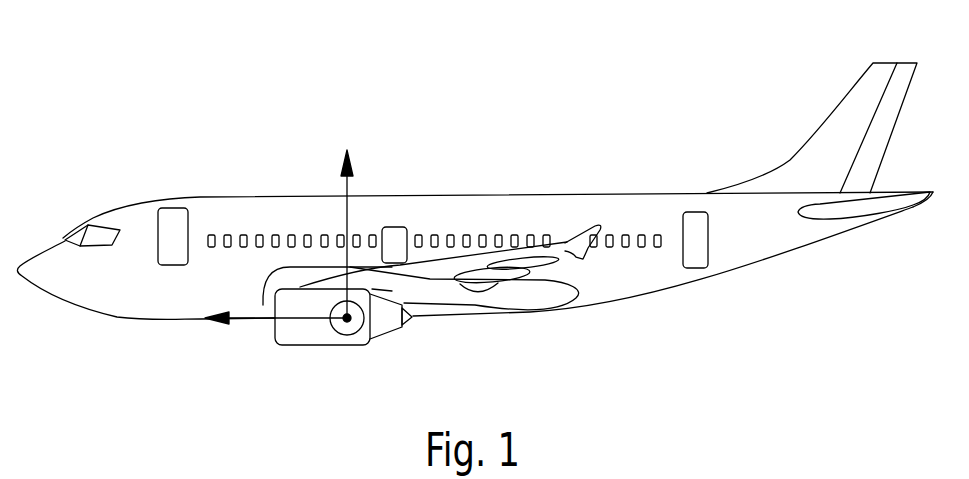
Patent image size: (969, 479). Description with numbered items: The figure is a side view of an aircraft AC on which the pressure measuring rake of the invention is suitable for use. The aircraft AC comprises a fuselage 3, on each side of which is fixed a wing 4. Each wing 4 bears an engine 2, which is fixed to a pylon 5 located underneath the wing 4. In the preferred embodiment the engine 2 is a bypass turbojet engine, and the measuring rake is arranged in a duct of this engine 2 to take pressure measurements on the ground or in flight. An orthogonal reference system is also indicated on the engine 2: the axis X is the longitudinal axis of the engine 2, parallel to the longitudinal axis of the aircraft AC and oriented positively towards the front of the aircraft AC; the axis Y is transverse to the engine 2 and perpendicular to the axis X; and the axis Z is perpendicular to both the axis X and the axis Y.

The aircraft AC is at (674, 110).
The engine 2 is at (285, 346).
The fuselage 3 is at (467, 218).
The wing 4 is at (437, 268).
The pylon 5 is at (428, 291).
The longitudinal axis X is at (250, 321).
The transverse axis Y is at (345, 330).
The vertical axis Z is at (353, 217).